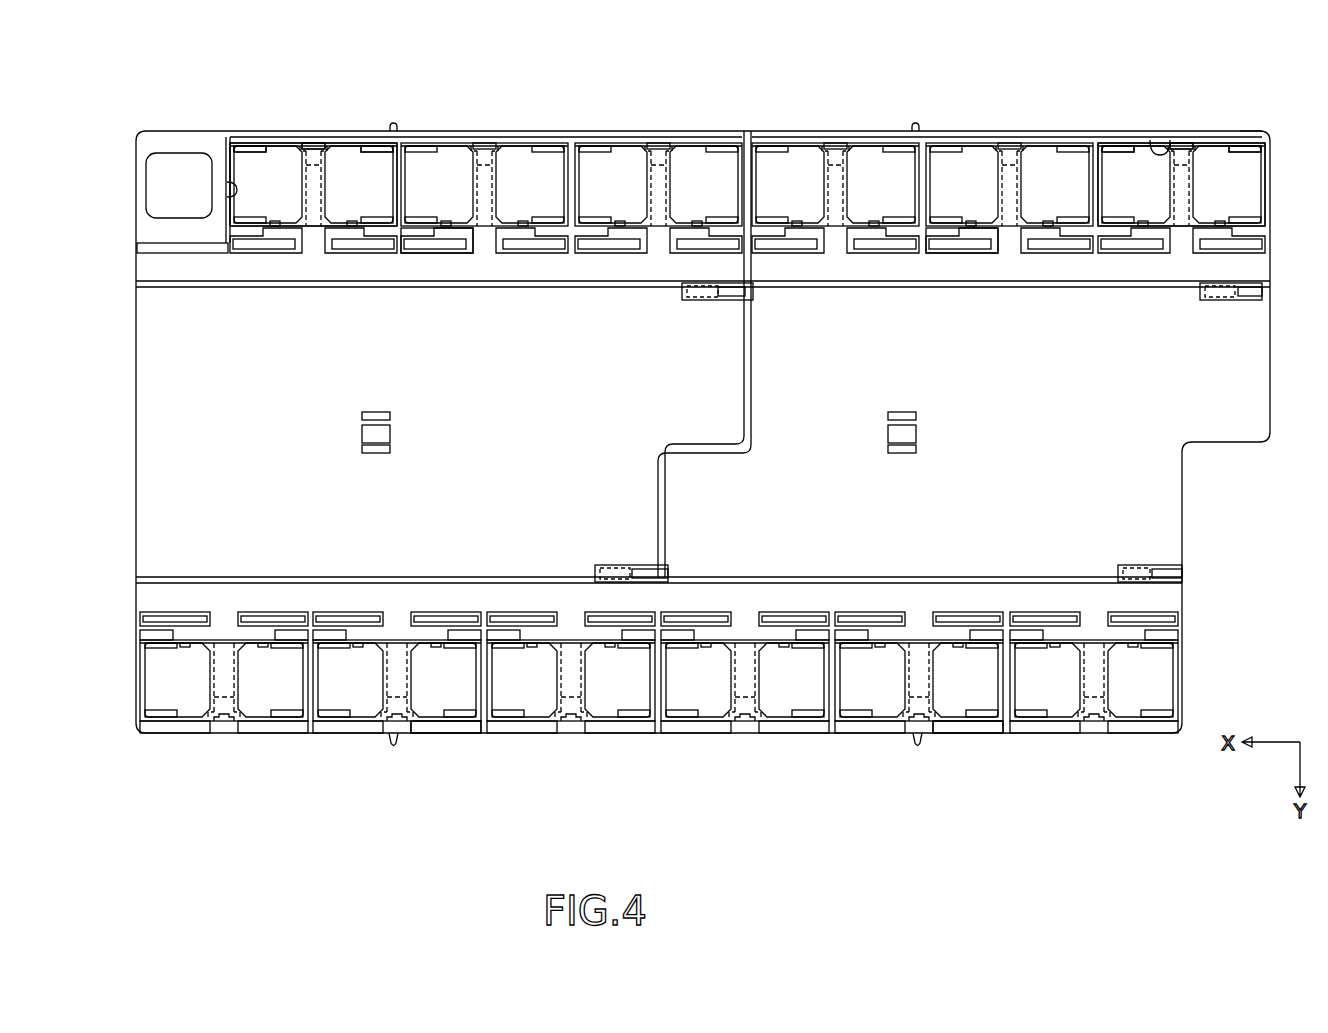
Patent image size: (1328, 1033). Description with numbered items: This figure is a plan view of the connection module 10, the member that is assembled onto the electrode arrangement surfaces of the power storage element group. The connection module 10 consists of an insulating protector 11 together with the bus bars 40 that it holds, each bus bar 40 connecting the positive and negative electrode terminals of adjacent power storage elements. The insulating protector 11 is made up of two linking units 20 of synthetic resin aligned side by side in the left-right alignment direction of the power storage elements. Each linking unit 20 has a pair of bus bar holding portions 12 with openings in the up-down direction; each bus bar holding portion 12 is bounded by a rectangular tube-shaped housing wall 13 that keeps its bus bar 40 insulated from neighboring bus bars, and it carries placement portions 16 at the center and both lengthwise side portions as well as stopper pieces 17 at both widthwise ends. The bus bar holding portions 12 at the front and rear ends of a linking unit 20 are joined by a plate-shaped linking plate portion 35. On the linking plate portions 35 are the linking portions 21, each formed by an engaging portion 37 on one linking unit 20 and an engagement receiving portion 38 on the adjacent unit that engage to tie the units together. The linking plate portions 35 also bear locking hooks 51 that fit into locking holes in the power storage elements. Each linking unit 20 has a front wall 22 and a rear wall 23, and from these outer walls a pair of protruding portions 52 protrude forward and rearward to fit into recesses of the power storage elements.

The connection module 10 is at (855, 52).
The insulating protector 11 is at (790, 82).
The bus bar holding portion 12 is at (230, 190).
The housing wall 13 is at (228, 156).
The placement portion 16 is at (240, 150).
The stopper piece 17 is at (276, 220).
The linking unit 20 is at (640, 360).
The linking portion 21 is at (648, 770).
The front wall 22 is at (437, 733).
The rear wall 23 is at (477, 133).
The linking plate portion 35 is at (162, 414).
The engaging portion 37 is at (640, 580).
The engagement receiving portion 38 is at (600, 562).
The bus bar 40 is at (253, 160).
The locking hook 51 is at (374, 412).
The protruding portion 52 is at (393, 123).